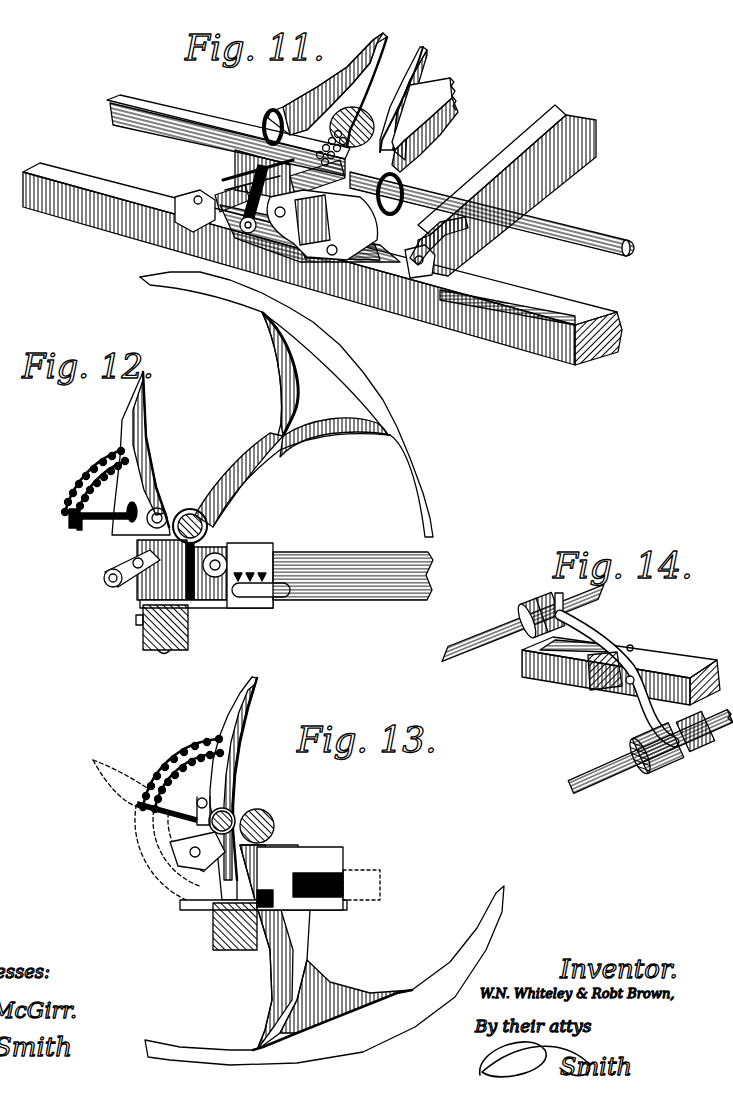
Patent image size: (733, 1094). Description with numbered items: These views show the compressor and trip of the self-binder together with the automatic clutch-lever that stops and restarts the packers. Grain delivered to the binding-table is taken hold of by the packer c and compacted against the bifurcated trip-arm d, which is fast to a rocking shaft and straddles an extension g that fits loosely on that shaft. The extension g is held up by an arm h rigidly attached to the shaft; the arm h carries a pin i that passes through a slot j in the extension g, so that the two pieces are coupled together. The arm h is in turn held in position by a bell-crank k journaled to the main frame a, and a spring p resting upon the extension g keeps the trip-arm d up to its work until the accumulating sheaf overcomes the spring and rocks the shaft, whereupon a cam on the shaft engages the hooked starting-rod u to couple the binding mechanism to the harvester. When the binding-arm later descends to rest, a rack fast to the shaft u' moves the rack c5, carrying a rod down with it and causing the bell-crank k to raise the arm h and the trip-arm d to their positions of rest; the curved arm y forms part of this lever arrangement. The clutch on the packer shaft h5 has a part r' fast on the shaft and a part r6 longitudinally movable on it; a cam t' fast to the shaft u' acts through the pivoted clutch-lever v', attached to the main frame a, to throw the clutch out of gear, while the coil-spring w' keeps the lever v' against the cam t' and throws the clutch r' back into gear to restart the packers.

In FIG. 11, the shaft u' is at (370, 175).
In FIG. 14, the shaft u' is at (523, 627).
In FIG. 11, the bifurcated trip-arm d is at (403, 103).
In FIG. 12, the bifurcated trip-arm d is at (141, 453).
In FIG. 13, the bifurcated trip-arm d is at (233, 788).
In FIG. 11, the packer c is at (327, 90).
In FIG. 11, the pin i is at (368, 166).
In FIG. 12, the pin i is at (140, 510).
In FIG. 13, the pin i is at (208, 803).
In FIG. 11, the spring p is at (332, 151).
In FIG. 12, the spring p is at (95, 482).
In FIG. 13, the spring p is at (182, 774).
In FIG. 11, the slot j is at (322, 225).
In FIG. 13, the slot j is at (190, 838).
In FIG. 12, the forked arm y is at (286, 404).
In FIG. 12, the bell-crank k is at (98, 522).
In FIG. 12, the arm h is at (127, 504).
In FIG. 12, the hooked rod u is at (190, 557).
In FIG. 12, the rack c5 is at (258, 575).
In FIG. 13, the rack c5 is at (318, 878).
In FIG. 13, the extension g is at (140, 806).
In FIG. 14, the main frame a is at (621, 671).
In FIG. 14, the cam t' is at (527, 616).
In FIG. 14, the pivoted clutch-lever v' is at (617, 678).
In FIG. 14, the coil-spring w' is at (611, 683).
In FIG. 14, the shaft h5 is at (650, 752).
In FIG. 14, the clutch part r6 is at (655, 751).
In FIG. 14, the clutch part r' is at (695, 737).